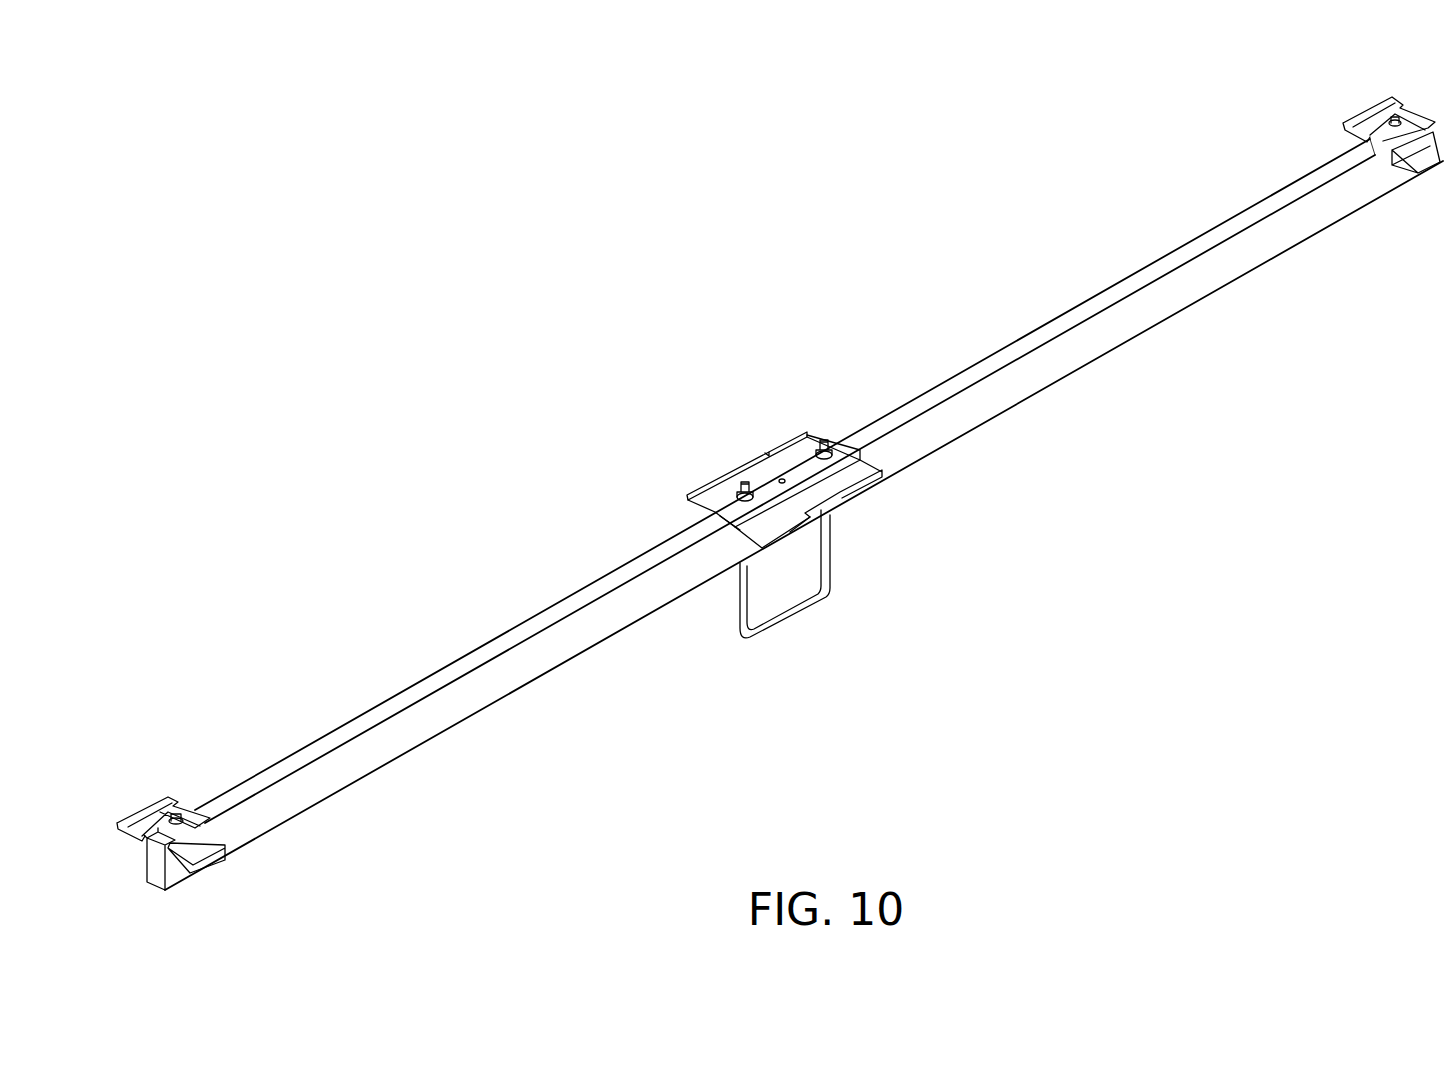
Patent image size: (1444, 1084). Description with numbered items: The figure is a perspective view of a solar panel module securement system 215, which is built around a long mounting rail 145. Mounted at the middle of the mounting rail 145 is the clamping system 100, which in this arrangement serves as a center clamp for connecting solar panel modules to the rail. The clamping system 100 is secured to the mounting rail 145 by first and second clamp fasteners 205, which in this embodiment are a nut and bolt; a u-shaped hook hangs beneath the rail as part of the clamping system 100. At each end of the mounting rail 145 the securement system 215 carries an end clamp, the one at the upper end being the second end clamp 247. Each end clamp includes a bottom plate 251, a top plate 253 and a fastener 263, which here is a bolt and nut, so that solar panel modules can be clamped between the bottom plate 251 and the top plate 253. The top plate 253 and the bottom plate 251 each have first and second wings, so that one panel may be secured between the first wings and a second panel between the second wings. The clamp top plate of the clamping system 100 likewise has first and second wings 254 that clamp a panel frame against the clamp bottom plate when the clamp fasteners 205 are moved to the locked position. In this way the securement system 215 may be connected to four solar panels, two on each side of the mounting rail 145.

The clamping system 100 is at (878, 525).
The mounting rail 145 is at (363, 727).
The clamp fasteners 205 is at (736, 485).
The solar panel module securement system 215 is at (570, 465).
The second end clamp 247 is at (1342, 95).
The bottom plate 251 is at (215, 845).
The top plate 253 is at (197, 813).
The wings 254 is at (193, 897).
The fastener 263 is at (178, 812).